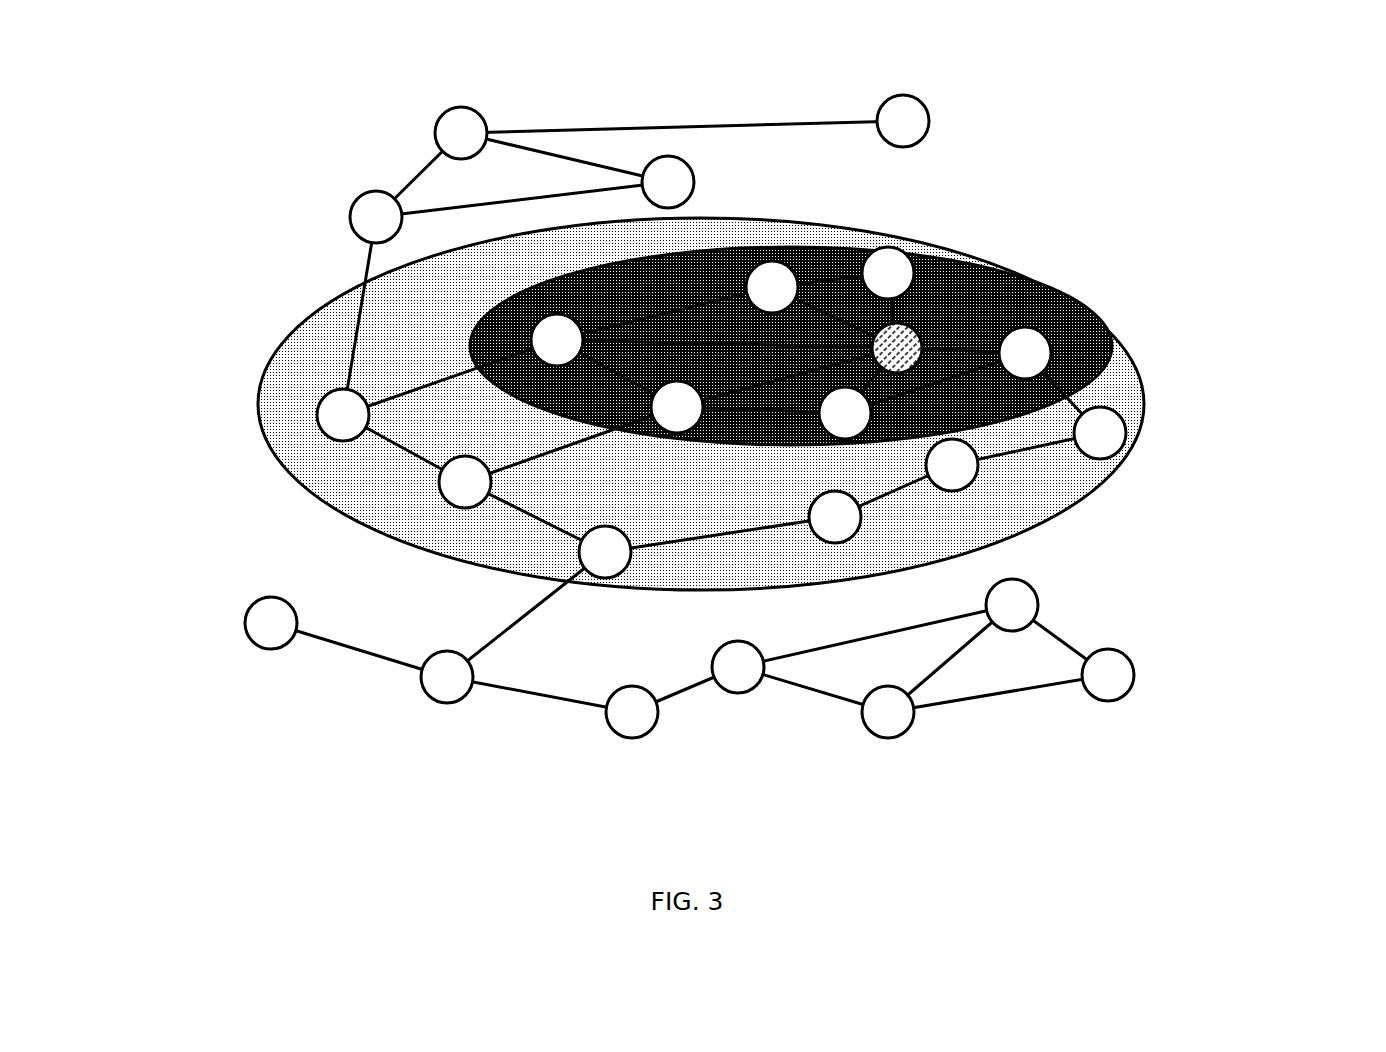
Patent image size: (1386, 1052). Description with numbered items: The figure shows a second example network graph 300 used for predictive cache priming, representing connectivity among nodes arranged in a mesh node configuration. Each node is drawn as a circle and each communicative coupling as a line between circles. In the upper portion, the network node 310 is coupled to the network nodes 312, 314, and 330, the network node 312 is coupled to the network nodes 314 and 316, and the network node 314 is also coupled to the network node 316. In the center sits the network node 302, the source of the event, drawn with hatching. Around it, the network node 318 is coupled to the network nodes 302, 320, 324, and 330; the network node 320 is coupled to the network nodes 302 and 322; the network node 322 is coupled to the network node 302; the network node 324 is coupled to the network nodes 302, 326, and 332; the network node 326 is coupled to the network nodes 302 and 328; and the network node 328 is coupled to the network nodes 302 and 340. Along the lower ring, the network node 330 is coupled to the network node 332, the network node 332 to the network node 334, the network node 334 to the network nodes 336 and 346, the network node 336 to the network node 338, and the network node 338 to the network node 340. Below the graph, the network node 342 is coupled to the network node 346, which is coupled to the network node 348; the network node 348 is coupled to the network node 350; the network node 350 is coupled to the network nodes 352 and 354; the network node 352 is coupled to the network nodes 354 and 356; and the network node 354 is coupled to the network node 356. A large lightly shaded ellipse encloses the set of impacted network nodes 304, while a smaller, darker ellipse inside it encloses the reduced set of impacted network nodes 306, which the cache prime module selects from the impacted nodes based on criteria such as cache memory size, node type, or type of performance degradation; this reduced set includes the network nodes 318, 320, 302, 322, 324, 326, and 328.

The network graph 300 is at (257, 127).
The network node 302 is at (922, 333).
The set of impacted network nodes 304 is at (282, 345).
The reduced set of impacted network nodes 306 is at (1107, 323).
The network node 310 is at (357, 228).
The network node 312 is at (442, 144).
The network node 314 is at (649, 193).
The network node 316 is at (884, 132).
The network node 318 is at (538, 351).
The network node 320 is at (753, 298).
The network node 322 is at (869, 284).
The network node 324 is at (658, 418).
The network node 326 is at (826, 424).
The network node 328 is at (1006, 364).
The network node 330 is at (324, 426).
The network node 332 is at (446, 493).
The network node 334 is at (586, 563).
The network node 336 is at (816, 528).
The network node 338 is at (933, 476).
The network node 340 is at (1081, 444).
The network node 342 is at (252, 634).
The network node 346 is at (428, 688).
The network node 348 is at (613, 723).
The network node 350 is at (719, 678).
The network node 352 is at (869, 723).
The network node 354 is at (993, 616).
The network node 356 is at (1089, 686).